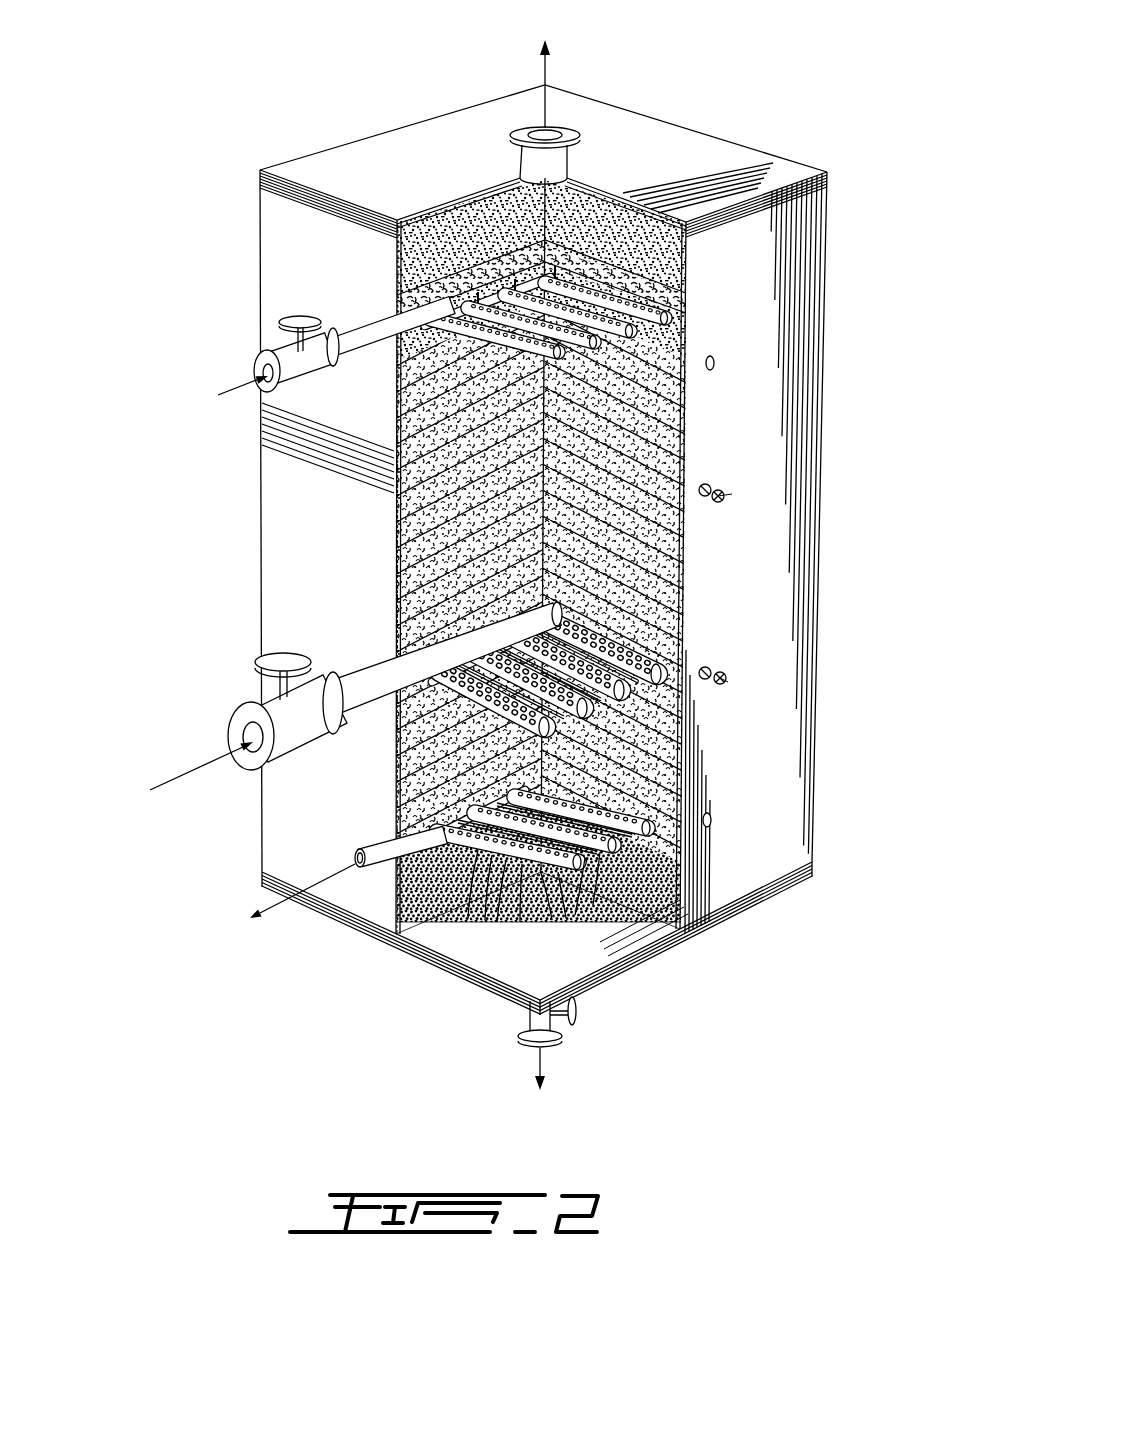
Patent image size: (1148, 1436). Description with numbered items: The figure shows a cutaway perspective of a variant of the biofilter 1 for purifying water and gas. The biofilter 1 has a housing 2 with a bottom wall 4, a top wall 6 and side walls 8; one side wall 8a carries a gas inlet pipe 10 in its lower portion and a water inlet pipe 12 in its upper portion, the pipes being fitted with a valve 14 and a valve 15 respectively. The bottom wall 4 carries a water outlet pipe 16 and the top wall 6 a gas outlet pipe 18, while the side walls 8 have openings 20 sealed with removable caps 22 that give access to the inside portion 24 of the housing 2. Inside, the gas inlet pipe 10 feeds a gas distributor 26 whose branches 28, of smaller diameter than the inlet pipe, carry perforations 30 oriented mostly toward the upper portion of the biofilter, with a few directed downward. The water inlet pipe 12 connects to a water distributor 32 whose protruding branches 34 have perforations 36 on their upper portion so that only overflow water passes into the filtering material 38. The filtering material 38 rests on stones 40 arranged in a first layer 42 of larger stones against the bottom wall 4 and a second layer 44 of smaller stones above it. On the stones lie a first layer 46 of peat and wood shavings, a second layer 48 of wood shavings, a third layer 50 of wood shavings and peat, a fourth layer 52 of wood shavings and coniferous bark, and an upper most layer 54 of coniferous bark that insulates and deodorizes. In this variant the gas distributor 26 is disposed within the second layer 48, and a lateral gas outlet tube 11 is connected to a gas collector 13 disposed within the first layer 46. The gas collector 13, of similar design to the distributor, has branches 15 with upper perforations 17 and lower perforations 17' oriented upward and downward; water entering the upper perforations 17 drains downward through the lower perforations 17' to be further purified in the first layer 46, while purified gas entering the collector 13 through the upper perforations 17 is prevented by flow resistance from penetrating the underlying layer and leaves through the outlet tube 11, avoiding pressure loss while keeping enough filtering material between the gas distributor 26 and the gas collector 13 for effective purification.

The biofilter 1 is at (546, 544).
The housing 2 is at (543, 135).
The bottom wall 4 is at (583, 980).
The top wall 6 is at (618, 112).
The side walls 8 is at (267, 568).
The side wall 8a is at (263, 627).
The gas inlet pipe 10 is at (365, 680).
The lateral gas outlet tube 11 is at (358, 854).
The water inlet pipe 12 is at (372, 323).
The gas collector 13 is at (416, 811).
The valve 14 is at (290, 703).
The valve / branches 15 is at (270, 352).
The water outlet pipe 16 is at (522, 1010).
The upper perforations 17 is at (531, 814).
The lower perforations 17' is at (531, 901).
The gas outlet pipe 18 is at (533, 162).
The openings 20 is at (708, 486).
The removable caps 22 is at (730, 494).
The inside portion 24 is at (693, 918).
The gas distributor 26 is at (540, 667).
The branches 28 is at (470, 703).
The perforations 30 is at (432, 663).
The water distributor 32 is at (615, 291).
The branches 34 is at (438, 366).
The perforations 36 is at (470, 268).
The filtering material 38 is at (414, 472).
The stones 40 is at (367, 917).
The first layer 42 is at (640, 913).
The second layer 44 is at (645, 905).
The first layer of filtering material 46 is at (712, 825).
The second layer 48 is at (682, 623).
The third layer 50 is at (687, 437).
The fourth layer 52 is at (690, 365).
The upper most layer 54 is at (688, 272).